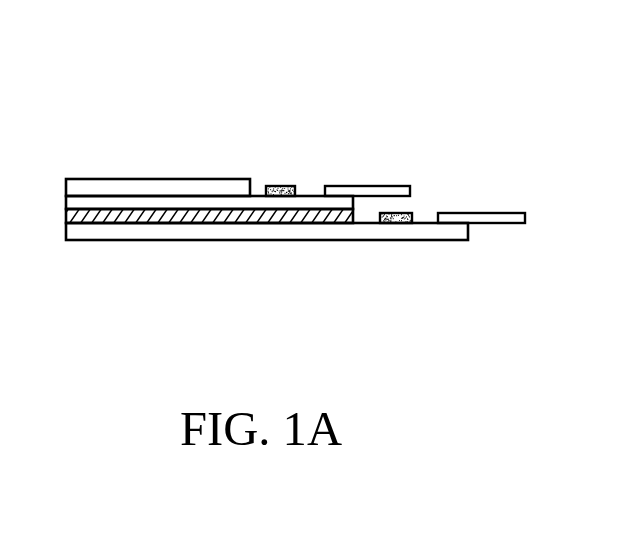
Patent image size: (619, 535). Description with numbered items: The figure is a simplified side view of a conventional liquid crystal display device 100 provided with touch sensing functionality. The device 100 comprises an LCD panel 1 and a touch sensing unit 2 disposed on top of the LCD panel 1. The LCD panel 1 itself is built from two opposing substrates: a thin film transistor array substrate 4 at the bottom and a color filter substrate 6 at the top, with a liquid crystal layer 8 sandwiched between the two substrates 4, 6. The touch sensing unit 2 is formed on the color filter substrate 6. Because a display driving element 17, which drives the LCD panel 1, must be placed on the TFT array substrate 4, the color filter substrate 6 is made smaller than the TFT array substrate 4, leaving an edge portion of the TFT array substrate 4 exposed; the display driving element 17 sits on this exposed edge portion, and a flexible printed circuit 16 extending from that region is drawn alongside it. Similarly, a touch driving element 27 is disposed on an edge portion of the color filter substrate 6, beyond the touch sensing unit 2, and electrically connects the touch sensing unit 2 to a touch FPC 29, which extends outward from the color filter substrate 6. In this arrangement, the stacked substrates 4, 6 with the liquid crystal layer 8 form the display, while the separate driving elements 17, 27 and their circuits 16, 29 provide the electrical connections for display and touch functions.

The liquid crystal display device 100 is at (467, 95).
The LCD panel 1 is at (152, 306).
The touch sensing unit 2 is at (164, 188).
The thin film transistor array substrate 4 is at (268, 232).
The color filter substrate 6 is at (152, 203).
The liquid crystal layer 8 is at (208, 217).
The flexible circuit board 16 is at (525, 219).
The display driving element 17 is at (392, 225).
The touch driving element 27 is at (278, 186).
The touch FPC 29 is at (410, 191).